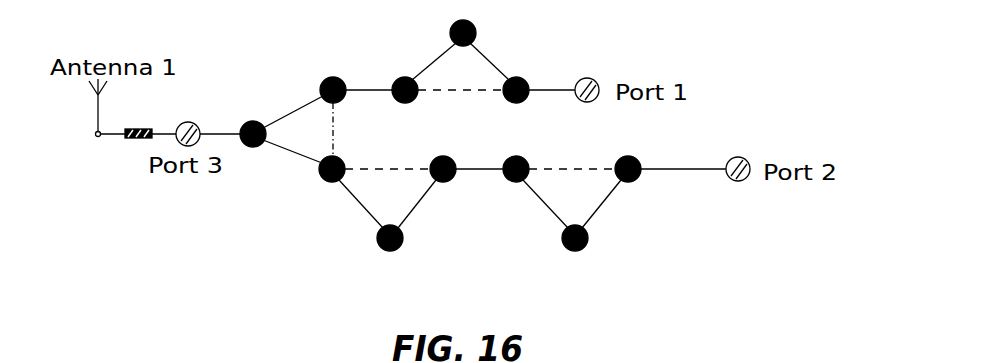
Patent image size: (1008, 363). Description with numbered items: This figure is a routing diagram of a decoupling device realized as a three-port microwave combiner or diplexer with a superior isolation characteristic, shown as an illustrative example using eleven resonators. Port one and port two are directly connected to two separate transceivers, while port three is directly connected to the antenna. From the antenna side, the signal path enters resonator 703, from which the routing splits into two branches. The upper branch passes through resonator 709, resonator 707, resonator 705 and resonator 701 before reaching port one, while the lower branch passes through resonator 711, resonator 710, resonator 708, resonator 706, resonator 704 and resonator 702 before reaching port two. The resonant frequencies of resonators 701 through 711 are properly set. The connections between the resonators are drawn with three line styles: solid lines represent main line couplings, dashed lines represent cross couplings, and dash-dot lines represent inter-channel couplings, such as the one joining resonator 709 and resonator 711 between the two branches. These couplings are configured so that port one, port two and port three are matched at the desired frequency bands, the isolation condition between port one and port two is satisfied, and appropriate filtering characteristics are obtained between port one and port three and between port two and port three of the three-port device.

The resonator 701 is at (537, 100).
The resonator 702 is at (649, 179).
The resonator 703 is at (262, 149).
The resonator 704 is at (600, 248).
The resonator 705 is at (487, 25).
The resonator 706 is at (537, 179).
The resonator 707 is at (427, 101).
The resonator 708 is at (464, 179).
The resonator 709 is at (356, 101).
The resonator 710 is at (415, 248).
The resonator 711 is at (353, 179).